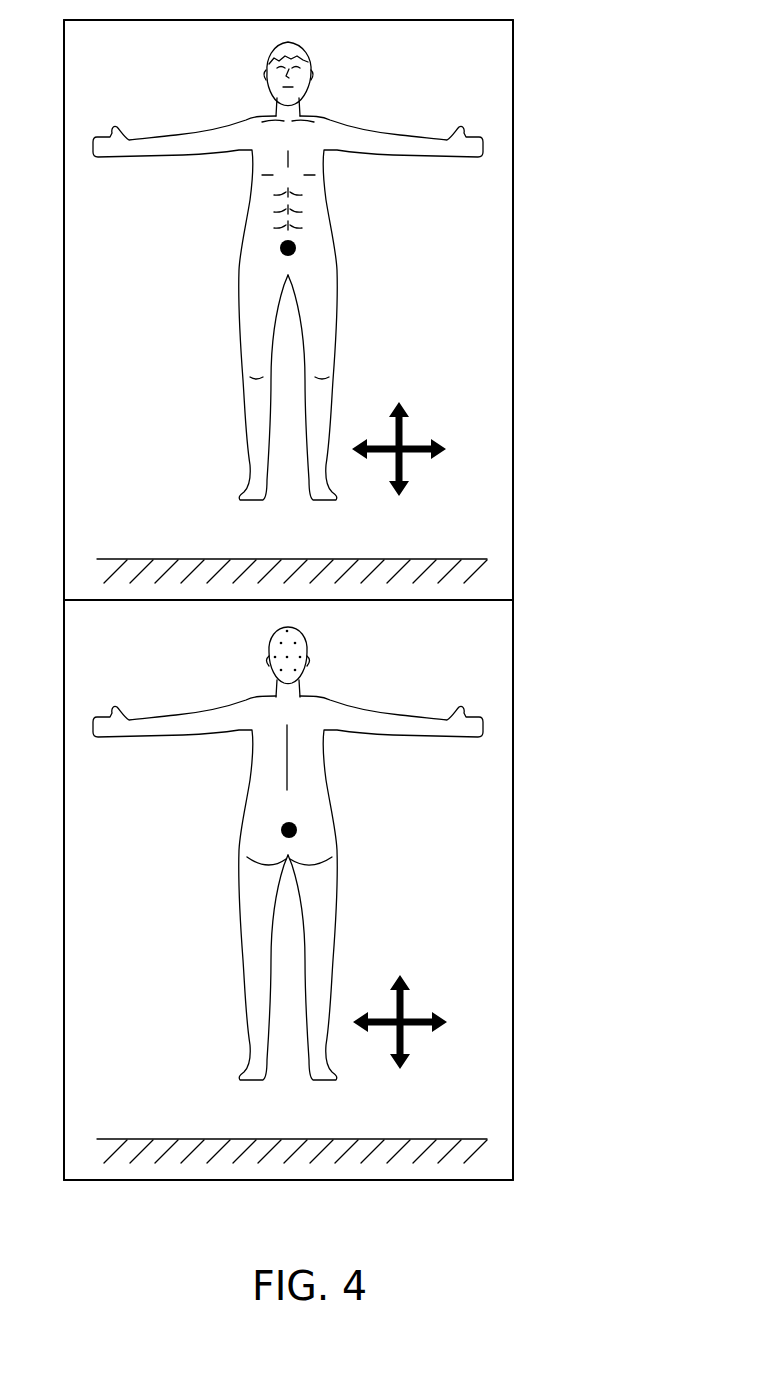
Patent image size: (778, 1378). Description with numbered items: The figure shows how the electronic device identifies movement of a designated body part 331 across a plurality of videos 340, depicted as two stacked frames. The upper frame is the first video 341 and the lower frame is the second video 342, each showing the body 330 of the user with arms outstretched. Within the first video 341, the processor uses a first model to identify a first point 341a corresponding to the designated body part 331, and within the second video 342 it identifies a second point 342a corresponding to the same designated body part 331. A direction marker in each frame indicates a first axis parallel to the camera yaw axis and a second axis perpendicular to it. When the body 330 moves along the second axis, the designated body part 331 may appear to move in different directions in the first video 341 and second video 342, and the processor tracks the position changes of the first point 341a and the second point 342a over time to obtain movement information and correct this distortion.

The body 330 is at (292, 43).
The designated body part 331 is at (323, 192).
The plurality of videos 340 is at (620, 1085).
The first video 341 is at (513, 255).
The second video 342 is at (513, 888).
The first point 341a is at (297, 247).
The second point 342a is at (282, 830).